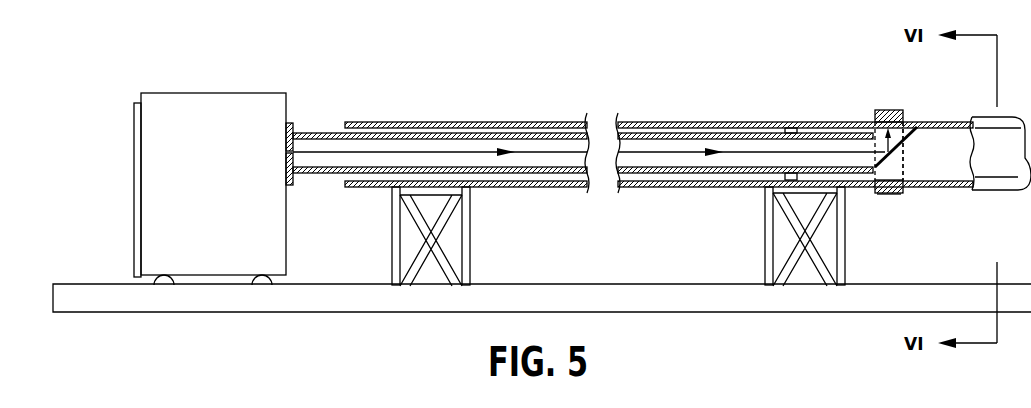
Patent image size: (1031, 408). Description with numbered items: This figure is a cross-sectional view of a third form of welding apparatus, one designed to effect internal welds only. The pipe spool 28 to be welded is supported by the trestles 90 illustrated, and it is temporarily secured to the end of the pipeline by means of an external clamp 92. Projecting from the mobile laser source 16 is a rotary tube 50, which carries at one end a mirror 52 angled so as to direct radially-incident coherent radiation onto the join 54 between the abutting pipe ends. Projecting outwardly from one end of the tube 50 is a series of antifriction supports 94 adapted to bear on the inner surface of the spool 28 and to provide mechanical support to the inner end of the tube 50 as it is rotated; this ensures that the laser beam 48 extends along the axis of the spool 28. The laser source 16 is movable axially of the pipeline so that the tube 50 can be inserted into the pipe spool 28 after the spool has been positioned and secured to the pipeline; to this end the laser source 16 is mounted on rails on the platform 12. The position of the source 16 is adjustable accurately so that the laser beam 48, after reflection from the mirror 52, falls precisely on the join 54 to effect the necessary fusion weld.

The platform 12 is at (617, 289).
The mobile laser source 16 is at (270, 112).
The pipe spool 28 is at (533, 187).
The laser beam 48 is at (688, 154).
The rotary tube 50 is at (313, 132).
The mirror 52 is at (898, 114).
The join 54 is at (908, 182).
The trestles 90 is at (392, 225).
The external clamp 92 is at (884, 193).
The antifriction supports 94 is at (792, 127).